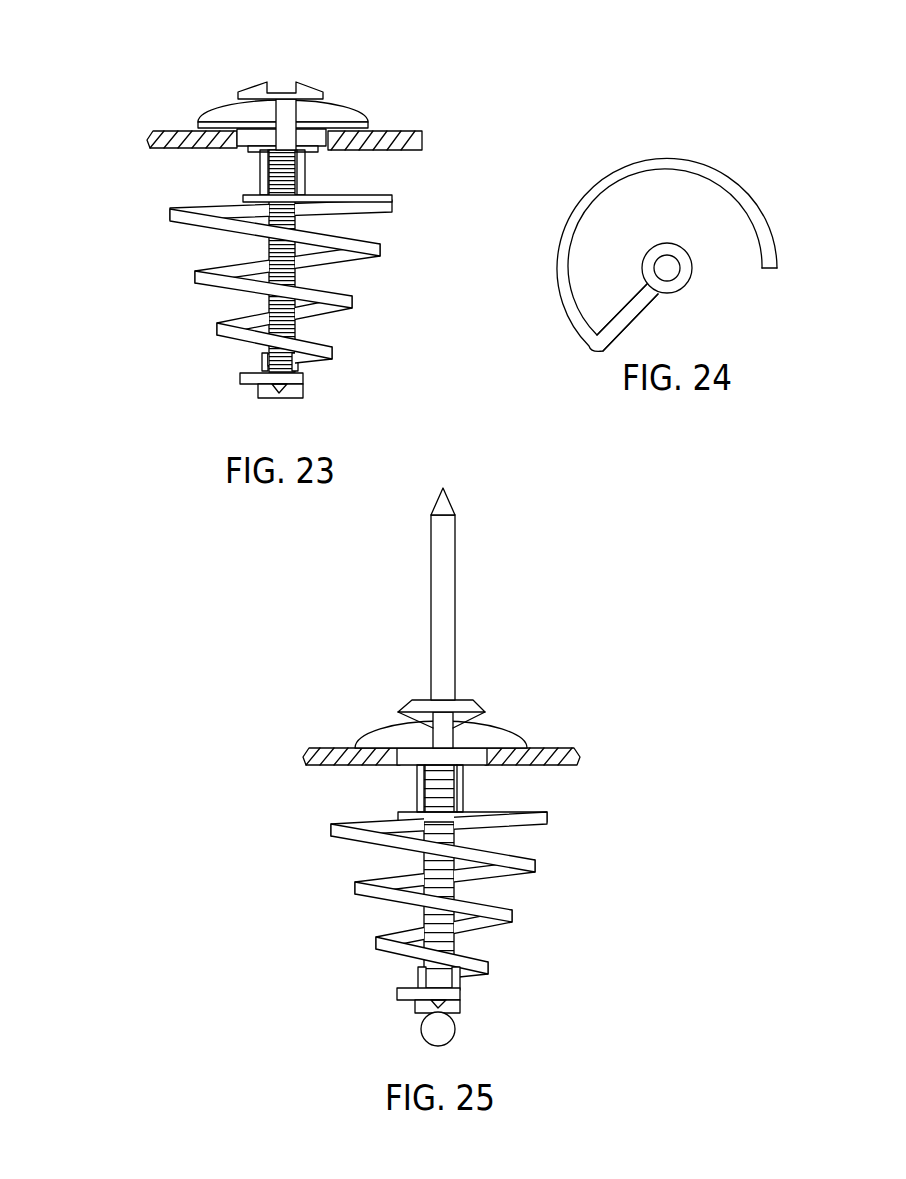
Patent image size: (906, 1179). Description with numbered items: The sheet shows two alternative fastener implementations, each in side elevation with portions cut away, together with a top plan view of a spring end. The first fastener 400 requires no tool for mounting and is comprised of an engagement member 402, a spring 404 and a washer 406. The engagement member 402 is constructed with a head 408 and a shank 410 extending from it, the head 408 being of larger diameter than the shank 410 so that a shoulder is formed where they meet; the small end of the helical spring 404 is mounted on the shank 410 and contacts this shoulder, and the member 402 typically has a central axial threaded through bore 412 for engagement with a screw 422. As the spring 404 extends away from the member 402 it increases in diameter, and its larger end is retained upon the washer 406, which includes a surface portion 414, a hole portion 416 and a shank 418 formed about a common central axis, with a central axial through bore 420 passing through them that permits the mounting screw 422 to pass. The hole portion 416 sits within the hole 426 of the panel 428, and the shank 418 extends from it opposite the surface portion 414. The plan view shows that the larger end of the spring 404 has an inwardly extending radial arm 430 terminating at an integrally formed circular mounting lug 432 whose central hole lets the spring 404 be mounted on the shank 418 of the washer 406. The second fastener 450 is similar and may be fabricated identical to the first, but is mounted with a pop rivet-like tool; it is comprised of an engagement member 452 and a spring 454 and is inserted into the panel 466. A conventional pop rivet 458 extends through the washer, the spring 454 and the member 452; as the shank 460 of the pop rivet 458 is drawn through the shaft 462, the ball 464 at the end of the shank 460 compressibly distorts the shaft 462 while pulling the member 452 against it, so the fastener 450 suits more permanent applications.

In FIG. 23, the fastener 400 is at (205, 70).
In FIG. 23, the engagement member 402 is at (256, 352).
In FIG. 23, the spring 404 is at (193, 270).
In FIG. 24, the spring 404 is at (721, 171).
In FIG. 23, the washer 406 is at (201, 117).
In FIG. 23, the head 408 is at (303, 391).
In FIG. 23, the shank 410 is at (253, 365).
In FIG. 23, the threaded through bore 412 is at (267, 380).
In FIG. 23, the surface portion 414 is at (356, 110).
In FIG. 23, the hole portion 416 is at (318, 150).
In FIG. 23, the shank 418 is at (305, 182).
In FIG. 23, the through bore 420 is at (262, 195).
In FIG. 23, the screw 422 is at (259, 83).
In FIG. 23, the hole 426 is at (238, 153).
In FIG. 23, the panel 428 is at (146, 136).
In FIG. 24, the radial arm 430 is at (642, 305).
In FIG. 24, the mounting lug 432 is at (687, 268).
In FIG. 25, the fastener 450 is at (301, 849).
In FIG. 25, the engagement member 452 is at (412, 1011).
In FIG. 25, the spring 454 is at (374, 726).
In FIG. 25, the pop rivet 458 is at (470, 836).
In FIG. 25, the shank 460 is at (442, 644).
In FIG. 25, the shaft 462 is at (447, 888).
In FIG. 25, the ball 464 is at (427, 1042).
In FIG. 25, the panel 466 is at (302, 750).